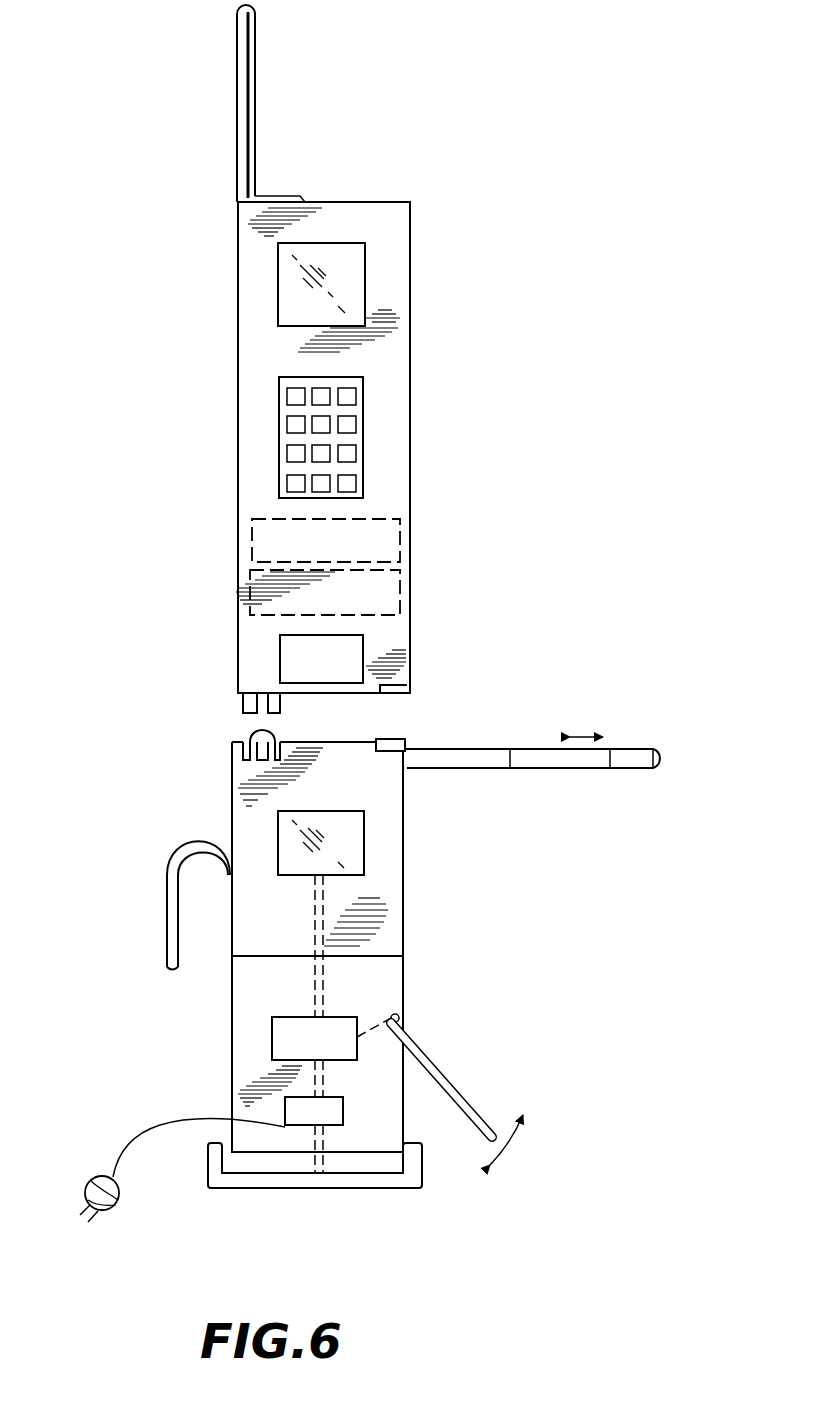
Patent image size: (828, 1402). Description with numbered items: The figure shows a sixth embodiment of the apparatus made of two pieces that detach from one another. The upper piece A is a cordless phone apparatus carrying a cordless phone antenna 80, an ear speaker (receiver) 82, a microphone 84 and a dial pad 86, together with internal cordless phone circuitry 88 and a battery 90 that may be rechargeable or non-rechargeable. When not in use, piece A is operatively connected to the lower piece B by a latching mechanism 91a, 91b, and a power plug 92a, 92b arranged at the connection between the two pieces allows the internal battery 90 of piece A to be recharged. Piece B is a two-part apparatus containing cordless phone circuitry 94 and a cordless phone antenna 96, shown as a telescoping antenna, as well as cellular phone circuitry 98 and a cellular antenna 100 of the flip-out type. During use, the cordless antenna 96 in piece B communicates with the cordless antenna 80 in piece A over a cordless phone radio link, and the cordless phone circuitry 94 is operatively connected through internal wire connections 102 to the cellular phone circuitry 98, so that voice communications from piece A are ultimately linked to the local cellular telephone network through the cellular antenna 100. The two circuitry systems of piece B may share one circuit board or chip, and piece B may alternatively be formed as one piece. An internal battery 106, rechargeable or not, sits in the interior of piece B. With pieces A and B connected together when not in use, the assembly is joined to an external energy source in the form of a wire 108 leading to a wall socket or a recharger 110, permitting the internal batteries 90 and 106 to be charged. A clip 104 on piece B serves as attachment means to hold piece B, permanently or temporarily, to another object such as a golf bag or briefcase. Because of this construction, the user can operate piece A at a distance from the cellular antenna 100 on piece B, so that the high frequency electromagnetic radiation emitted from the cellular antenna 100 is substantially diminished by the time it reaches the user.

The cordless phone antenna 80 is at (243, 118).
The ear speaker (receiver) 82 is at (353, 301).
The microphone 84 is at (360, 662).
The dial pad 86 is at (358, 448).
The internal cordless phone circuitry 88 is at (398, 543).
The battery 90 is at (400, 572).
The latching mechanism 91a is at (407, 690).
The latching mechanism 91b is at (398, 730).
The power plug 92a is at (280, 725).
The power plug 92b is at (238, 737).
The cordless phone circuitry 94 is at (353, 855).
The cordless phone antenna 96 is at (460, 757).
The cellular phone circuitry 98 is at (337, 1028).
The cellular antenna 100 is at (438, 1062).
The internal wire connections 102 is at (323, 930).
The clip 104 is at (170, 862).
The internal battery 106 is at (343, 1113).
The wire 108 is at (110, 1173).
The recharger 110 is at (375, 1180).
The piece A is at (231, 399).
The piece B is at (229, 797).